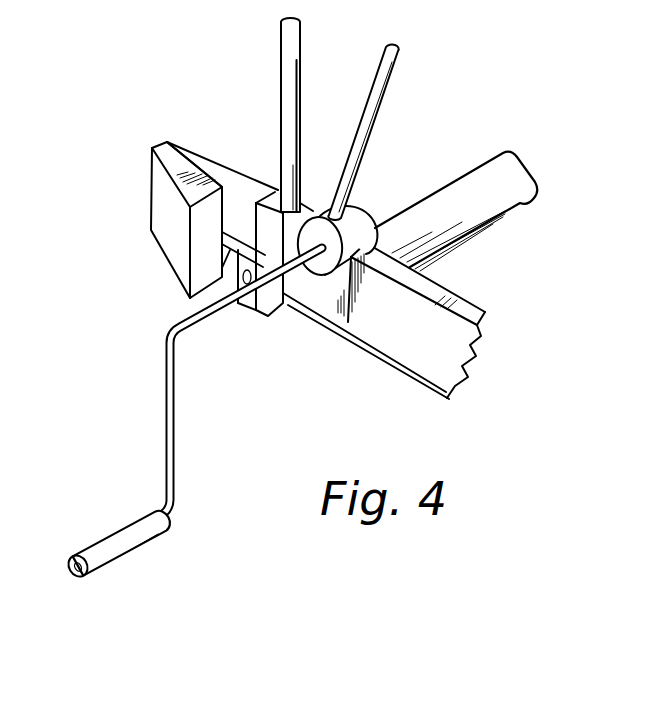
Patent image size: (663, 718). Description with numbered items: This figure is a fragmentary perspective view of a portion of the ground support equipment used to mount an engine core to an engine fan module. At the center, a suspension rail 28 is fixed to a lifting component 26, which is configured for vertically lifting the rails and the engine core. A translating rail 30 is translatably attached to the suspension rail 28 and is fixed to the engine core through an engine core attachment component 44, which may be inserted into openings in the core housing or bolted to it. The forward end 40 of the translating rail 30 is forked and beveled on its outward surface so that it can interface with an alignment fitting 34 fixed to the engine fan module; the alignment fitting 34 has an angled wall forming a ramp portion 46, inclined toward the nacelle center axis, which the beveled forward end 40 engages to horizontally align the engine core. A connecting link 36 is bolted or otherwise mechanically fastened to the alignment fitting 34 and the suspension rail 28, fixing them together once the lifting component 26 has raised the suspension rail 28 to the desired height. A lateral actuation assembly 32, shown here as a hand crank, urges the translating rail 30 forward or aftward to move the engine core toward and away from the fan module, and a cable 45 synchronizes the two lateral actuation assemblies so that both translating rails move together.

The lifting components 26 is at (293, 58).
The suspension rail 28 is at (382, 315).
The translating rail 30 is at (240, 194).
The lateral actuation assembly 32 is at (170, 417).
The alignment fitting 34 is at (165, 222).
The connecting link 36 is at (232, 268).
The forward end 40 is at (183, 150).
The engine core attachment component 44 is at (458, 187).
The cable 45 is at (367, 112).
The ramp portion 46 is at (223, 167).